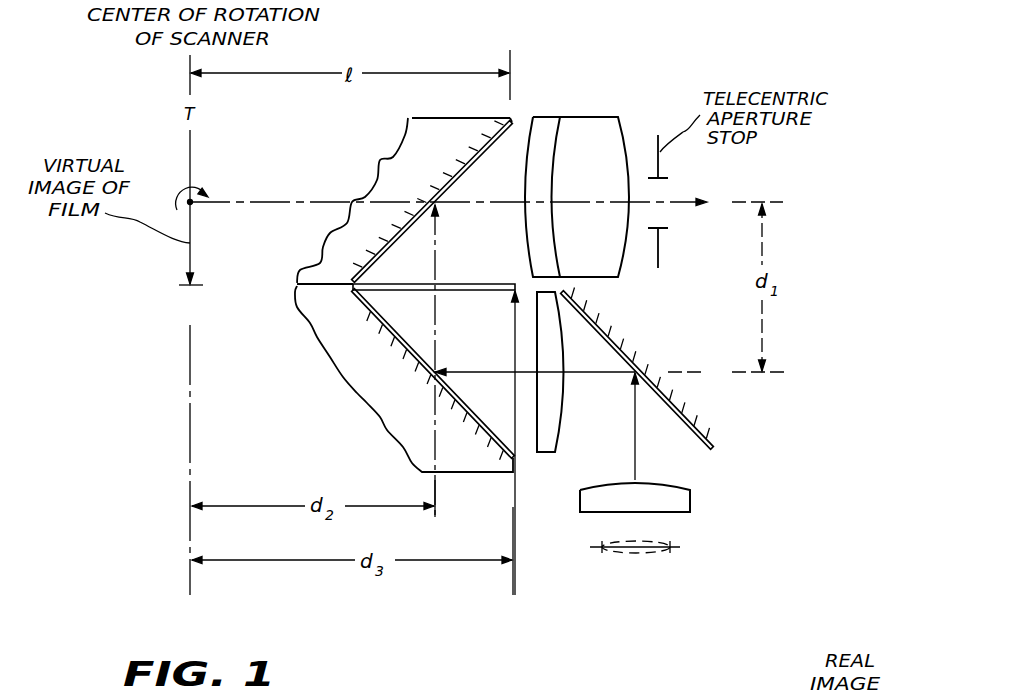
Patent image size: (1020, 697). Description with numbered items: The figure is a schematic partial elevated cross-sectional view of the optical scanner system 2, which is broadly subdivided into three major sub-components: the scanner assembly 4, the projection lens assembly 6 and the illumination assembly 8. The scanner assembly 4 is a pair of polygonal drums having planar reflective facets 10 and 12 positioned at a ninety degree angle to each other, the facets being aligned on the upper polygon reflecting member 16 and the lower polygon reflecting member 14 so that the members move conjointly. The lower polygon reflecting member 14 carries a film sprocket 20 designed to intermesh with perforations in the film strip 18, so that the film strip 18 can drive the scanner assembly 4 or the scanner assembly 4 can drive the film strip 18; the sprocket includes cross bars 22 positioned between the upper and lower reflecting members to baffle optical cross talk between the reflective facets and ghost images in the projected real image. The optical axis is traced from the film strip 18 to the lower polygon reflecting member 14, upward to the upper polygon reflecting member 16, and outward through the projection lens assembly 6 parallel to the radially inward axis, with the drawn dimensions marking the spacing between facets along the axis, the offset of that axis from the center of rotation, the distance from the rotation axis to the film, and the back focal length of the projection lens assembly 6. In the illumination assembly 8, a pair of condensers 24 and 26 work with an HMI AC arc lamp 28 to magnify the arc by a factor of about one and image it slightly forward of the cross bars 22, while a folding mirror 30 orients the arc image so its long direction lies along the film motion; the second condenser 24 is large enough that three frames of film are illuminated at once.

The optical scanner system 2 is at (106, 360).
The scanner assembly 4 is at (332, 397).
The projection lens assembly 6 is at (605, 117).
The illumination assembly 8 is at (660, 438).
The planar reflective facet 10 is at (515, 124).
The planar reflective facet 12 is at (365, 310).
The lower polygon reflecting member 14 is at (387, 408).
The upper polygon reflecting member 16 is at (393, 160).
The film strip 18 is at (497, 283).
The film sprocket 20 is at (515, 460).
The cross bars 22 is at (453, 283).
The second condenser 24 is at (557, 415).
The condenser 26 is at (670, 488).
The HMI AC arc lamp 28 is at (682, 547).
The folding mirror 30 is at (707, 437).